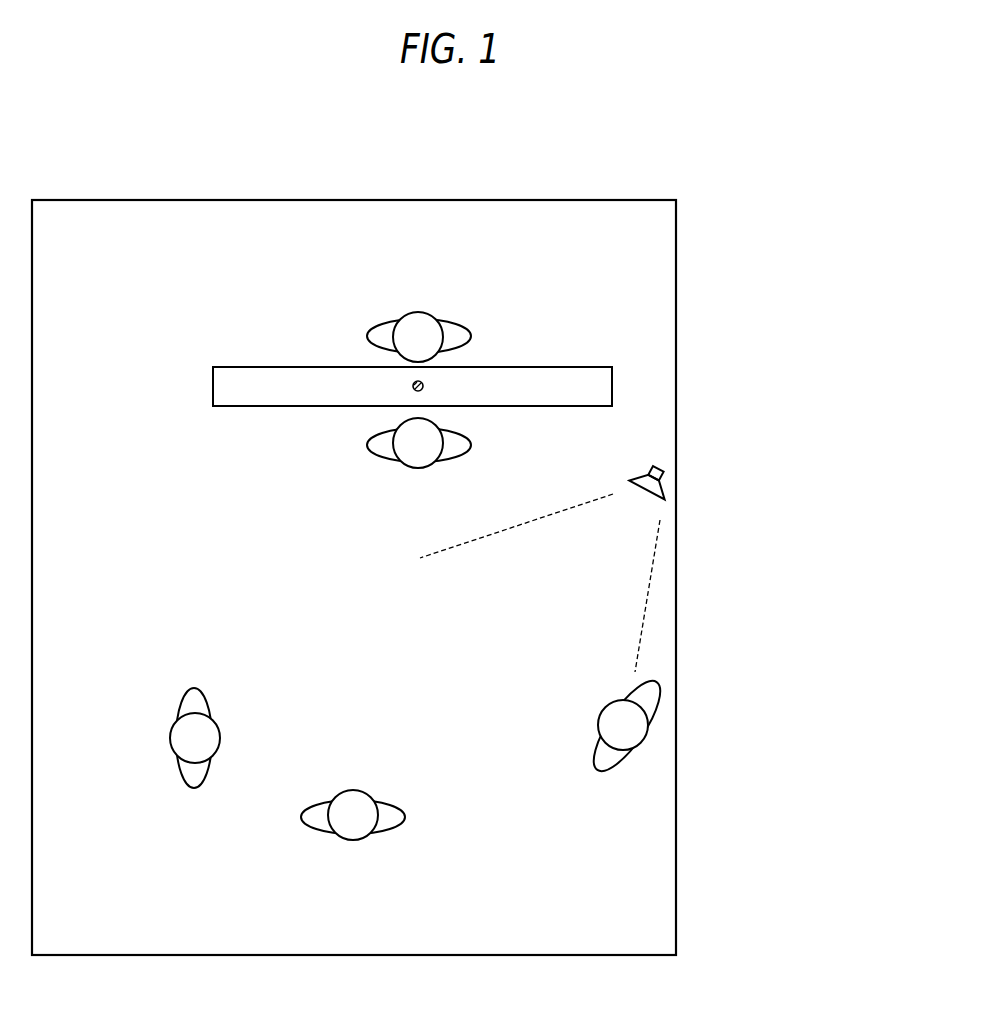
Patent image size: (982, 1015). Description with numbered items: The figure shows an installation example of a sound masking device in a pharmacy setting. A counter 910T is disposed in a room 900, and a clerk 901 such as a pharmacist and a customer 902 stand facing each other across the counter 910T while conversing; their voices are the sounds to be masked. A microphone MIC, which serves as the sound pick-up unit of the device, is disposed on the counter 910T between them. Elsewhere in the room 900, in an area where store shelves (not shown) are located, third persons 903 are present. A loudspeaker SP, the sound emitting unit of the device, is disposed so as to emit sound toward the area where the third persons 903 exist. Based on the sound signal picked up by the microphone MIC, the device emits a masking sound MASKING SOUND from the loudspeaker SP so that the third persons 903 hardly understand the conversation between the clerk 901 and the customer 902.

The room 900 is at (134, 199).
The clerk 901 is at (420, 311).
The customer 902 is at (418, 470).
The third persons 903 is at (188, 790).
The counter 910T is at (592, 366).
The microphone MIC is at (410, 384).
The loudspeaker SP is at (668, 497).
The masking sound MASKING SOUND is at (652, 573).